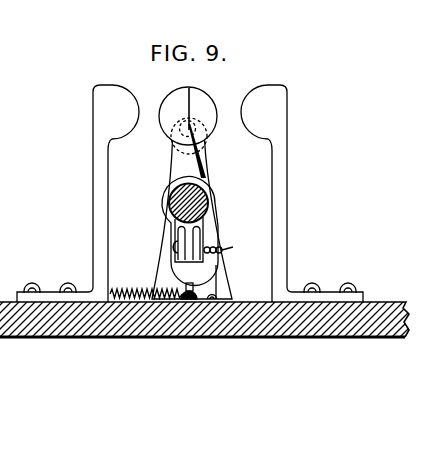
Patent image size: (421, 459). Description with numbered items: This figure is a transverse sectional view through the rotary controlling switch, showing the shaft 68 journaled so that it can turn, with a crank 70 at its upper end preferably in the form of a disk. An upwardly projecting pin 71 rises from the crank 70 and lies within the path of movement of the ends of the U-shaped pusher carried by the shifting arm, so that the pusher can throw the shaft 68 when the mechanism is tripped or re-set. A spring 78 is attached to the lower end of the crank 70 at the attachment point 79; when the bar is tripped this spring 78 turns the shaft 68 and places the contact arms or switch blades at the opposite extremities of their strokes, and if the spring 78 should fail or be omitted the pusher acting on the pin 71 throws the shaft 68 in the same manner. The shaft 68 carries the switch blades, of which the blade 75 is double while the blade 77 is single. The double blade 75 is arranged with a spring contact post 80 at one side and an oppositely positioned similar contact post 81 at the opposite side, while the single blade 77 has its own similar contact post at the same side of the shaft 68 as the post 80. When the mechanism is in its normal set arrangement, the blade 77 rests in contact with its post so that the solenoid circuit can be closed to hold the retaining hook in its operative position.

The shaft 68 is at (209, 194).
The crank 70 is at (174, 164).
The pin 71 is at (171, 138).
The contact arm 75 is at (207, 106).
The contact arm 77 is at (172, 102).
The spring 78 is at (130, 292).
The spring attachment point 79 is at (188, 291).
The spring contact post 80 is at (78, 193).
The contact post 81 is at (302, 193).